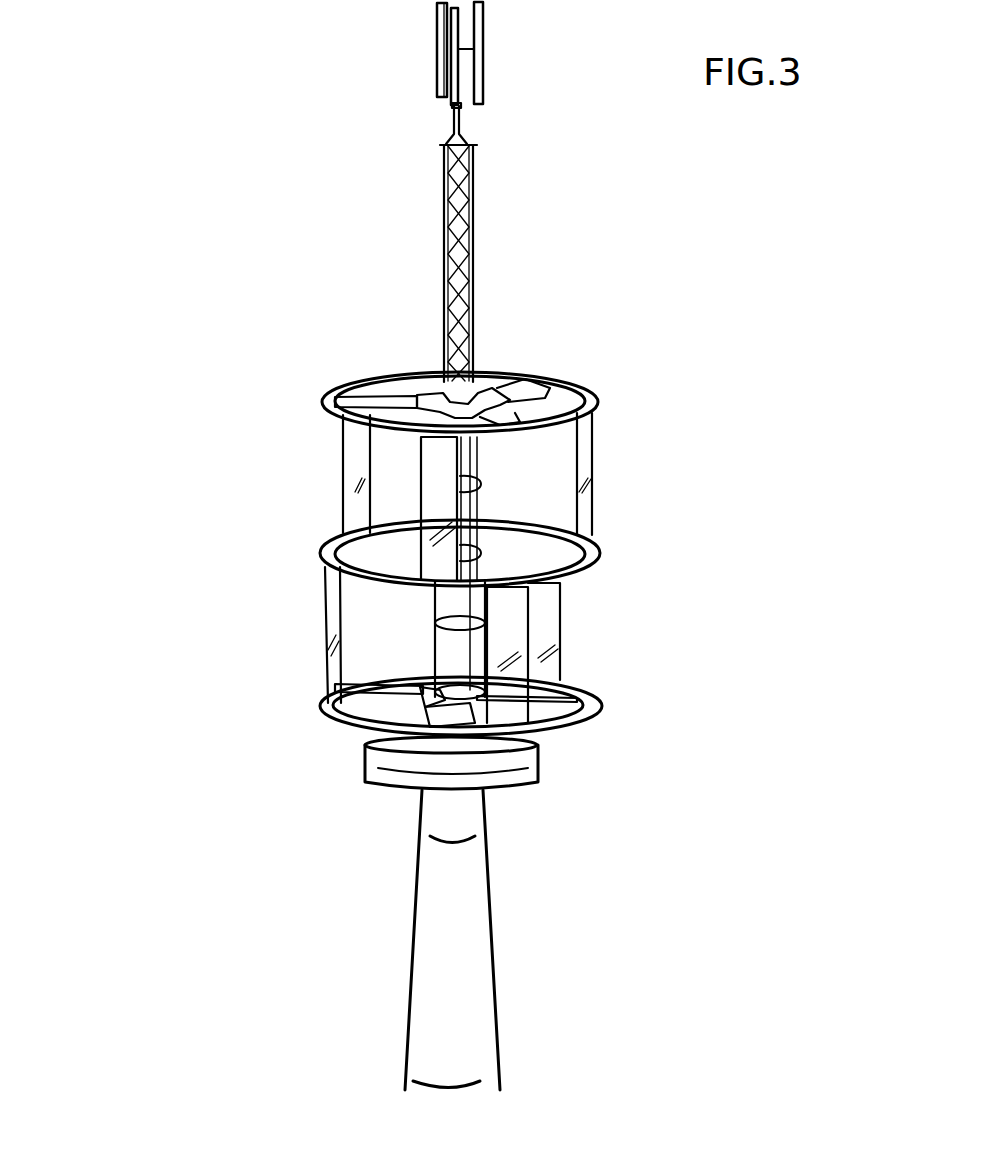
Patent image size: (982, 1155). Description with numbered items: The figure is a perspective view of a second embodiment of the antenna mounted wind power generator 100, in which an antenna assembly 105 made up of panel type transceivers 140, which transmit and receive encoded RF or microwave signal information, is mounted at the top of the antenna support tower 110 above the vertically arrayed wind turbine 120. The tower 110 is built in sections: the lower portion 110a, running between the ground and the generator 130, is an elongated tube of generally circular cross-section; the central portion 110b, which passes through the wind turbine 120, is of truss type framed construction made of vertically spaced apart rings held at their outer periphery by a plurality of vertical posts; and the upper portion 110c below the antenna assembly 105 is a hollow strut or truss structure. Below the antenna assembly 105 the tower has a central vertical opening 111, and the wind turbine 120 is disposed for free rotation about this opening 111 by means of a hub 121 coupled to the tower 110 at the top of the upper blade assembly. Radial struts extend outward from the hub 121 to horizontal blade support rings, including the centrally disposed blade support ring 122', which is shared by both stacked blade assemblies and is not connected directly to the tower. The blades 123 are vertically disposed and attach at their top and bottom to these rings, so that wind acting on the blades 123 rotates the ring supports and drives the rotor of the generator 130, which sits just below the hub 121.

The antenna mounted wind power generator 100 is at (268, 165).
The antenna assembly 105 is at (503, 67).
The antenna support tower 110 is at (180, 988).
The lower portion of the tower 110a is at (458, 945).
The central portion of the tower 110b is at (492, 633).
The upper portion of the tower 110c is at (505, 282).
The central vertical opening 111 is at (483, 485).
The vertically arrayed wind turbine 120 is at (262, 410).
The hub 121 is at (423, 365).
The blade support ring 122' is at (403, 526).
The blades 123 is at (345, 470).
The generator 130 is at (368, 773).
The panel type transceivers 140 is at (433, 65).